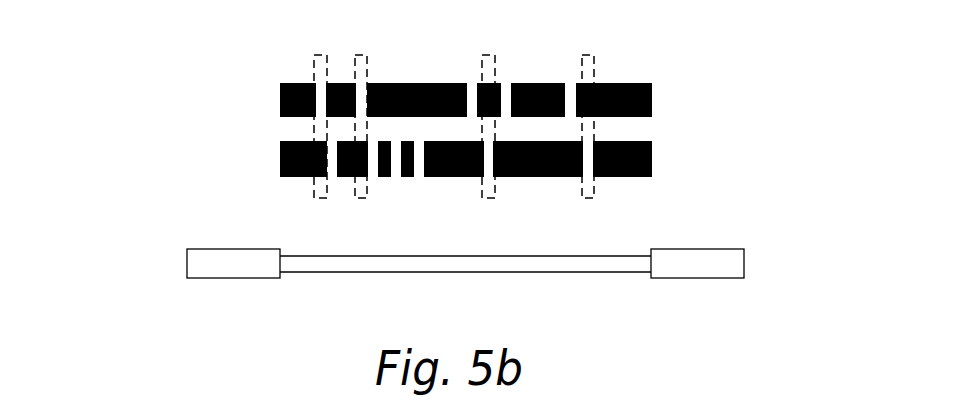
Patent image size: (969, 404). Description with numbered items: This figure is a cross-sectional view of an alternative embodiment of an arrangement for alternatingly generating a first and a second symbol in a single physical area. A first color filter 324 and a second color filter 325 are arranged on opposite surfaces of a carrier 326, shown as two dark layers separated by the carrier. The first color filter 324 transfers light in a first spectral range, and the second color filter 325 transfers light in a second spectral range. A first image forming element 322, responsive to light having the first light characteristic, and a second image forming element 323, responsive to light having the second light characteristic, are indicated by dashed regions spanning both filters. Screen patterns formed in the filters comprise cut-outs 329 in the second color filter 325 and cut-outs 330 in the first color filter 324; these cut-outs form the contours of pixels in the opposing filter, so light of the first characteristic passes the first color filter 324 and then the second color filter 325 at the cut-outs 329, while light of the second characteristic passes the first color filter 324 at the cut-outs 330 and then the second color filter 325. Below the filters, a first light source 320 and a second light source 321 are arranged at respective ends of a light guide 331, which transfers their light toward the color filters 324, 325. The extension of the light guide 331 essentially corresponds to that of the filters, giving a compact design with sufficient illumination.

The first light source 320 is at (186, 257).
The second light source 321 is at (744, 259).
The first image forming element 322 is at (355, 61).
The second image forming element 323 is at (494, 63).
The first color filter 324 is at (281, 151).
The second color filter 325 is at (652, 103).
The carrier 326 is at (652, 128).
The cut-outs 329 is at (588, 176).
The cut-outs 330 is at (472, 82).
The light guide 331 is at (565, 272).